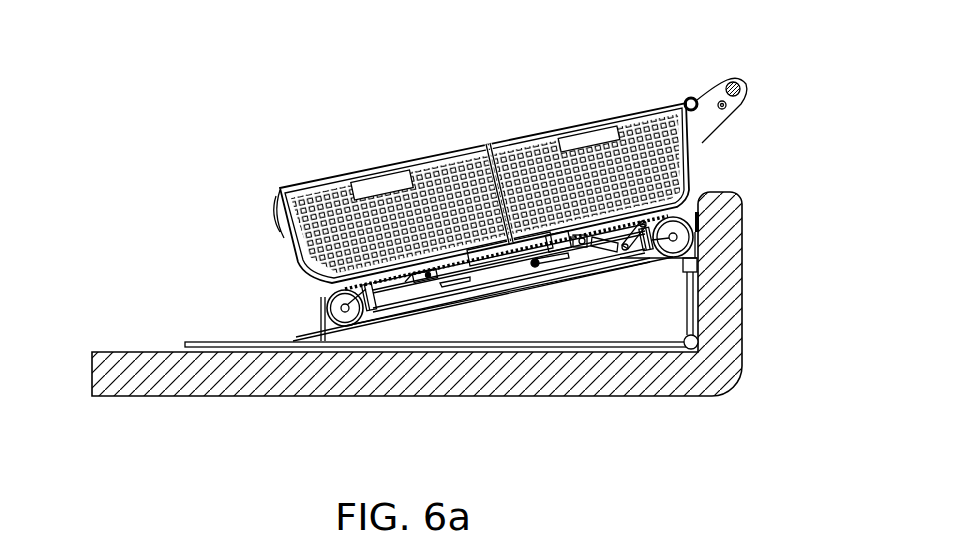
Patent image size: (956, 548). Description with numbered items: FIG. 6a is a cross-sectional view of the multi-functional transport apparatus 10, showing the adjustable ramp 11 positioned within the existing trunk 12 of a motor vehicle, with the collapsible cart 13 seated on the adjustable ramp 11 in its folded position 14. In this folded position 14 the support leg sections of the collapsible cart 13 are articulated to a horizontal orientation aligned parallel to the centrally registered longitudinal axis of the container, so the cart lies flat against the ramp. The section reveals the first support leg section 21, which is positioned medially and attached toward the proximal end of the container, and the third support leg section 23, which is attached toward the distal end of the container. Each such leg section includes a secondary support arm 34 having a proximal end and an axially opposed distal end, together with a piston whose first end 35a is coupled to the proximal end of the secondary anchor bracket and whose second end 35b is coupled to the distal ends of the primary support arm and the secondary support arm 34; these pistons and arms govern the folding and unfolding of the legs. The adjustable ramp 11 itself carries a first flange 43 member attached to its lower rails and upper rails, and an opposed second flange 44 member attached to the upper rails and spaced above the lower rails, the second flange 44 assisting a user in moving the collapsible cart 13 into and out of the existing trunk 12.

The multi-functional transport apparatus 10 is at (316, 110).
The adjustable ramp 11 is at (292, 326).
The existing trunk 12 is at (735, 268).
The collapsible cart 13 is at (455, 195).
The folded position 14 is at (614, 106).
The first support leg section 21 is at (312, 284).
The third support leg section 23 is at (687, 210).
The secondary support arm 34 is at (686, 289).
The first end of piston 35a is at (599, 250).
The second end of piston 35b is at (628, 247).
The first flange member 43 is at (194, 341).
The second flange member 44 is at (699, 213).